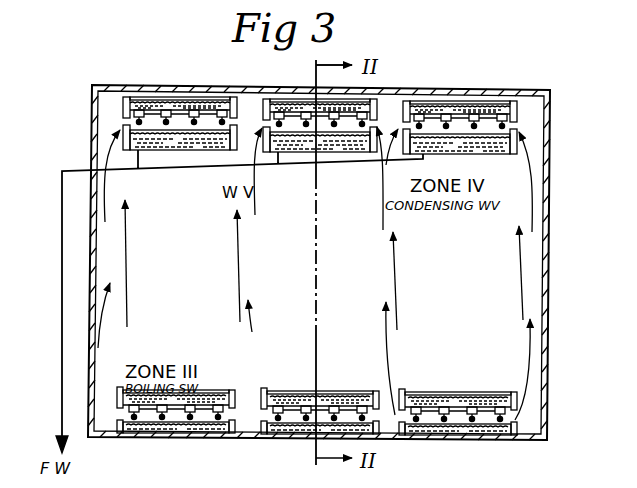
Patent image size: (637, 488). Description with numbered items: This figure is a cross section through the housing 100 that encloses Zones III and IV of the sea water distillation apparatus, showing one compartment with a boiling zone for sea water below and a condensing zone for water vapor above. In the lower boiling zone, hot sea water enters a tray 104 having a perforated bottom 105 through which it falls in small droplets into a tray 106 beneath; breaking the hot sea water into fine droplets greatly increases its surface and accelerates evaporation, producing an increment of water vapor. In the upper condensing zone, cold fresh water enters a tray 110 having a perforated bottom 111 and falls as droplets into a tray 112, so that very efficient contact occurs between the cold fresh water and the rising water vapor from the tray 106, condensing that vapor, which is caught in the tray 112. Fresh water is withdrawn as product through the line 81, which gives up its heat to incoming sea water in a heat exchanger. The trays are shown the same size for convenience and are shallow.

The housing 100 is at (552, 100).
The tray 110 is at (487, 110).
The perforated bottom 111 is at (420, 120).
The tray 112 is at (522, 133).
The tray 104 is at (480, 405).
The perforated bottom 105 is at (500, 418).
The tray 106 is at (472, 424).
The line 81 is at (62, 349).